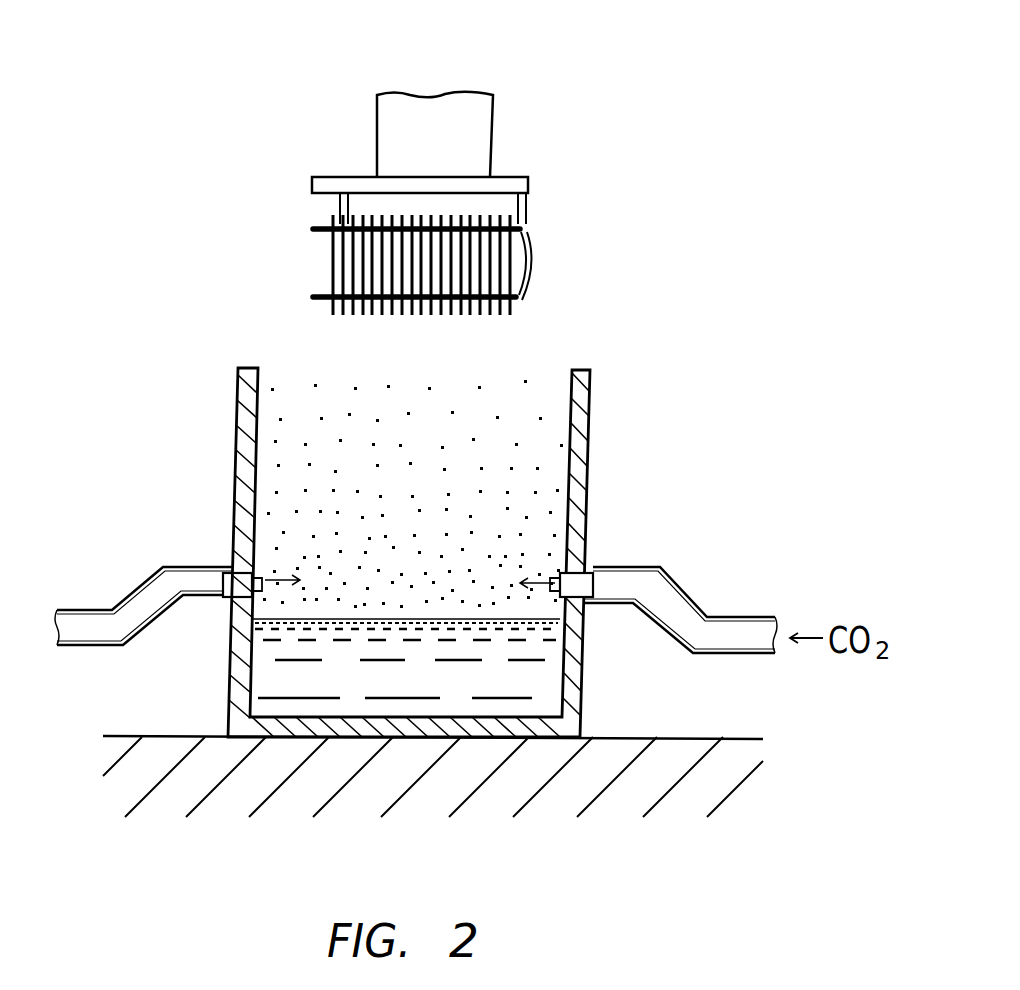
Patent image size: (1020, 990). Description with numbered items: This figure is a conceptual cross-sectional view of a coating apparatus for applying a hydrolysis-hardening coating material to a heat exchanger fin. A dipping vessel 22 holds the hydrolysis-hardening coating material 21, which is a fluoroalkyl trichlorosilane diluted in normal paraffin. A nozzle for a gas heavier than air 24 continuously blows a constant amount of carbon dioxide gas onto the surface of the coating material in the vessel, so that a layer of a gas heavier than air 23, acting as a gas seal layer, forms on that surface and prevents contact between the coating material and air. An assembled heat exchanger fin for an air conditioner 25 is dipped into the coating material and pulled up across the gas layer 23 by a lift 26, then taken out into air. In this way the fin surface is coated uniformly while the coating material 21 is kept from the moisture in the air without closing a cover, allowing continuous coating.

The hydrolysis-hardening coating material 21 is at (540, 704).
The dipping vessel 22 is at (590, 373).
The layer of a gas heavier than air 23 is at (468, 537).
The nozzle for a gas heavier than air 24 is at (580, 567).
The heat exchanger fin for an air conditioner 25 is at (490, 279).
The lift 26 is at (480, 112).